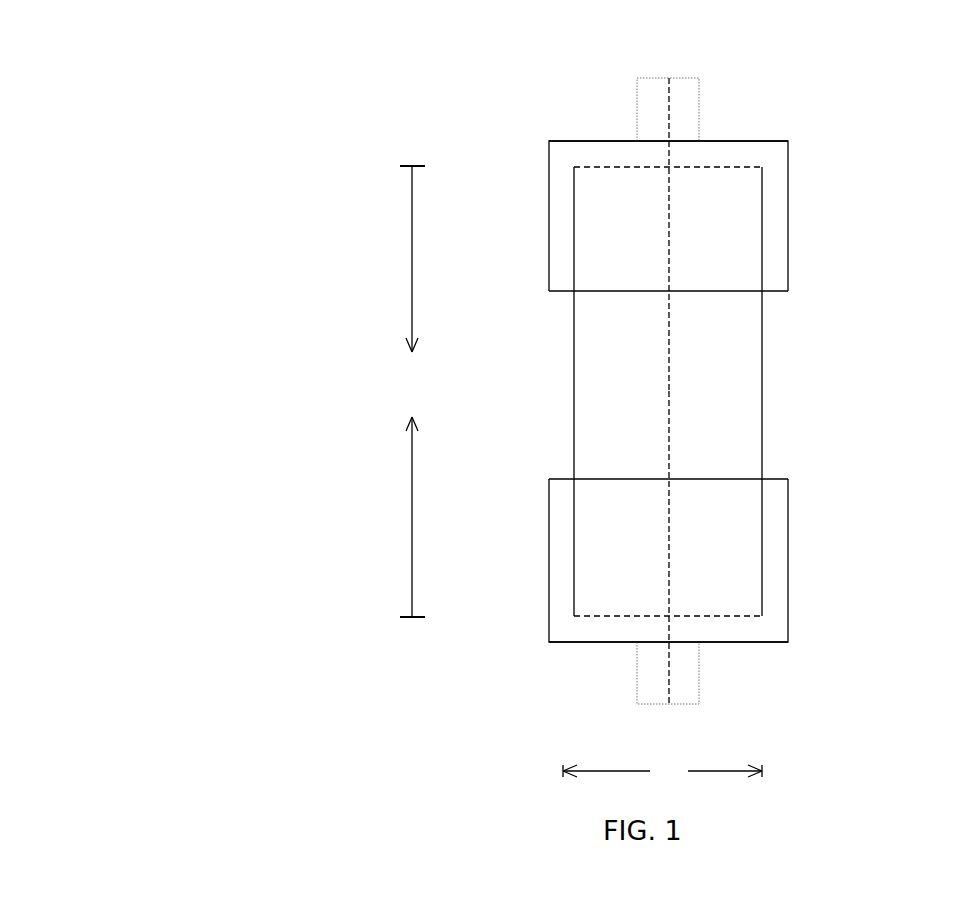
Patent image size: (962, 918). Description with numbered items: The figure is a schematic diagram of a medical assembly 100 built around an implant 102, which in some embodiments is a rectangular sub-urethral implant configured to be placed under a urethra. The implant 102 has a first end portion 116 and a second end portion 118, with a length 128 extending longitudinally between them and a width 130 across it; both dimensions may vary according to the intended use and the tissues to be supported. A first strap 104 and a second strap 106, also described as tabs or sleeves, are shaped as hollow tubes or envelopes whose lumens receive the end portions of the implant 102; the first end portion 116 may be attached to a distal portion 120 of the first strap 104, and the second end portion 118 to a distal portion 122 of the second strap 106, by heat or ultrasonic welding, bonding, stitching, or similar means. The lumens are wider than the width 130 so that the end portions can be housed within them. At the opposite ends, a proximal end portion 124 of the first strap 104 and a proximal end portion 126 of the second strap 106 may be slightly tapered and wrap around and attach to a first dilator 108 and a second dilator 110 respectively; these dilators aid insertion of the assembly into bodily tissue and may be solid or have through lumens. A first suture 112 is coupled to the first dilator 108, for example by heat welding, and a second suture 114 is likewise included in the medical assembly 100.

The medical assembly 100 is at (97, 122).
The implant 102 is at (574, 330).
The first strap 104 is at (788, 192).
The second strap 106 is at (788, 603).
The first dilator 108 is at (700, 117).
The second dilator 110 is at (699, 668).
The first suture 112 is at (675, 103).
The second suture 114 is at (663, 680).
The first end portion 116 is at (738, 216).
The second end portion 118 is at (737, 578).
The distal portion of the first tab 120 is at (775, 278).
The distal portion of the second tab 122 is at (775, 491).
The proximal end portion of the first strap 124 is at (788, 153).
The proximal end portion of the second strap 126 is at (775, 629).
The length 128 is at (409, 391).
The width 130 is at (662, 772).